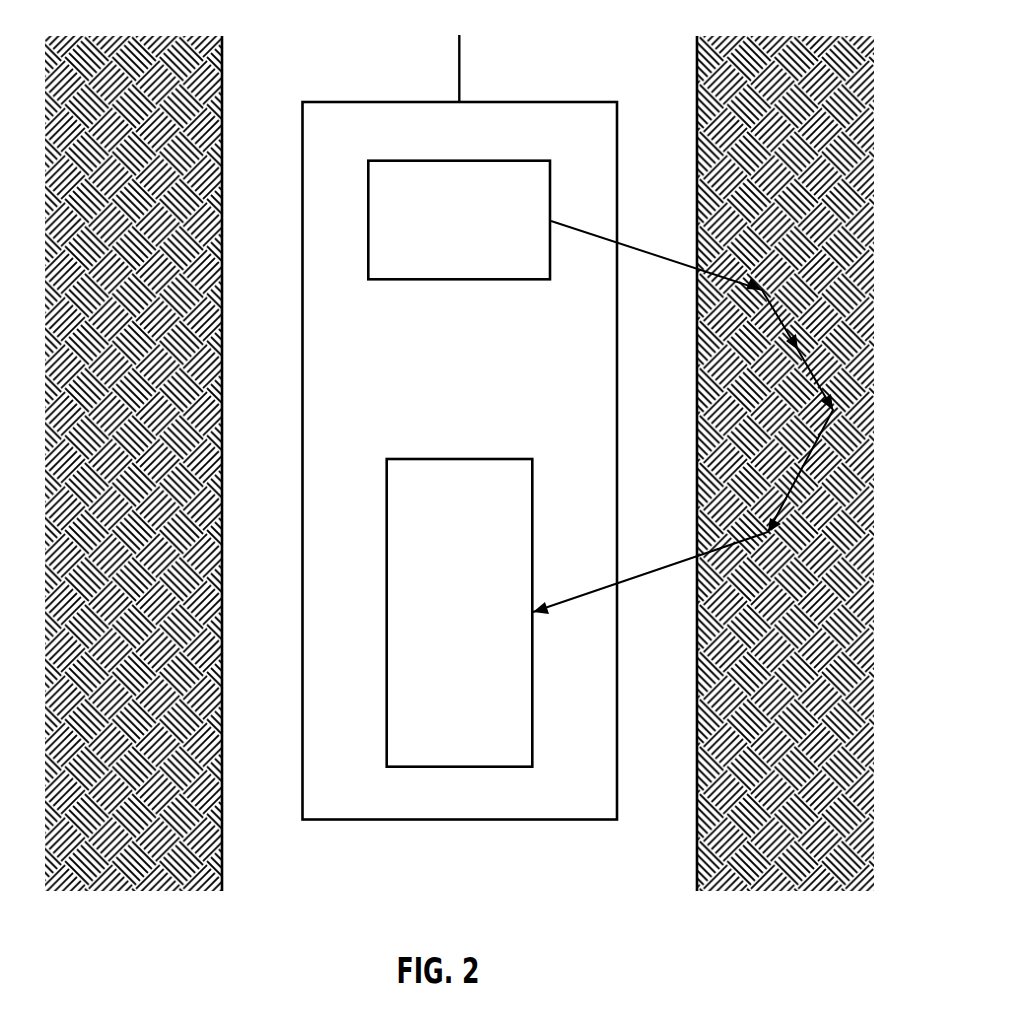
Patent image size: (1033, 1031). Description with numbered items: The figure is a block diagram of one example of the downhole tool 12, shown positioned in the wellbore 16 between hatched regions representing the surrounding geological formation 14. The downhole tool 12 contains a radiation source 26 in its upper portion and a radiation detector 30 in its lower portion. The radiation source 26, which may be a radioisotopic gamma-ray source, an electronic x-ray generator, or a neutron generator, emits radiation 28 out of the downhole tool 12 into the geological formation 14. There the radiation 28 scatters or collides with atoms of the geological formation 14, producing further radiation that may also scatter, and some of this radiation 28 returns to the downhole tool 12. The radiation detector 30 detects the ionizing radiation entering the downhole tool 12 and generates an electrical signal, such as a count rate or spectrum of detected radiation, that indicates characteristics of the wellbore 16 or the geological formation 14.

The downhole tool 12 is at (302, 101).
The geological formation 14 is at (806, 144).
The wellbore 16 is at (580, 55).
The radiation source 26 is at (427, 159).
The radiation 28 is at (800, 350).
The radiation detector 30 is at (445, 458).